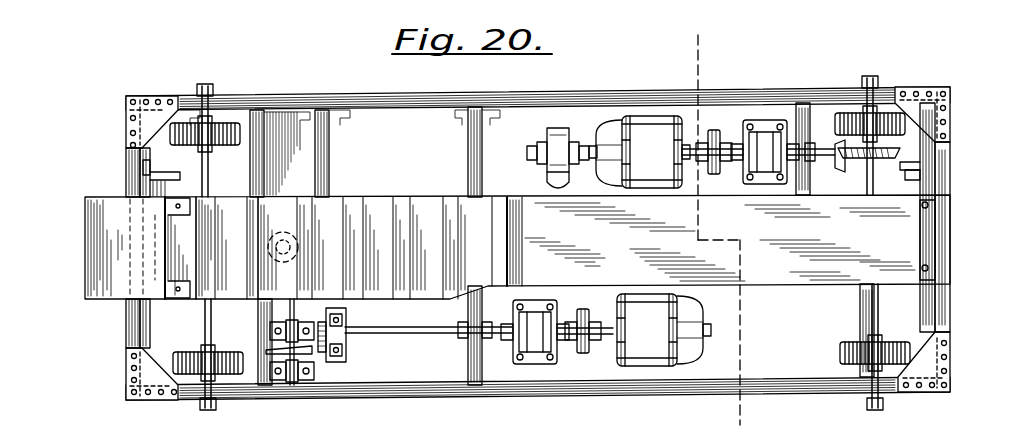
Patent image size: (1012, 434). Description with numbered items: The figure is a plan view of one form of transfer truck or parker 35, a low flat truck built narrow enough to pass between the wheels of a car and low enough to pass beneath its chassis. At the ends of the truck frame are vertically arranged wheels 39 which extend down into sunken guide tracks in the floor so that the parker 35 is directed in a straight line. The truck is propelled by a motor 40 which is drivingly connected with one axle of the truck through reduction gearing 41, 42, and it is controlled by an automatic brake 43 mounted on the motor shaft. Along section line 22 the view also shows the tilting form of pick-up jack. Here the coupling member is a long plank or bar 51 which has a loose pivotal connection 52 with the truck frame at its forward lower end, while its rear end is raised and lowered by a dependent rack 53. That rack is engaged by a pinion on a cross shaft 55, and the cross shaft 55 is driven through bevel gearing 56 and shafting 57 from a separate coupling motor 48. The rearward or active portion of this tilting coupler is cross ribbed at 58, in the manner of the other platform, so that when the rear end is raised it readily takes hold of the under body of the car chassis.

The section line 22 is at (700, 47).
The parker 35 is at (352, 99).
The wheels 39 is at (162, 182).
The motor 40 is at (666, 152).
The reduction gearing 41 is at (812, 142).
The reduction gearing 42 is at (858, 170).
The automatic brake 43 is at (546, 148).
The coupling motor 48 is at (664, 330).
The plank or bar 51 is at (604, 238).
The loose pivotal connection 52 is at (936, 230).
The dependent rack 53 is at (284, 232).
The cross shaft 55 is at (288, 310).
The bevel gearing 56 is at (346, 350).
The shafting 57 is at (398, 334).
The cross ribs 58 is at (403, 205).